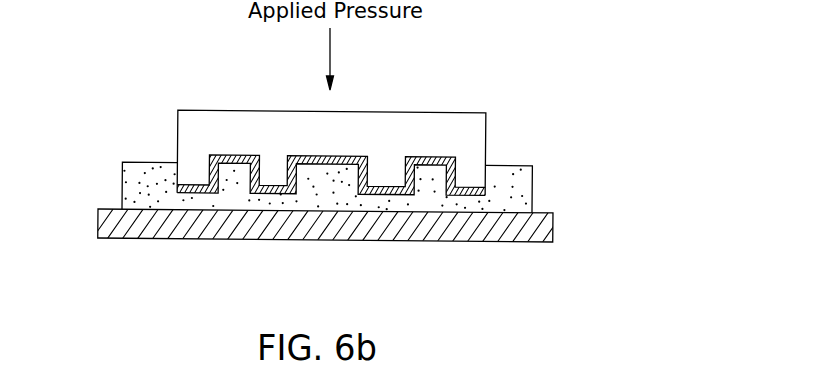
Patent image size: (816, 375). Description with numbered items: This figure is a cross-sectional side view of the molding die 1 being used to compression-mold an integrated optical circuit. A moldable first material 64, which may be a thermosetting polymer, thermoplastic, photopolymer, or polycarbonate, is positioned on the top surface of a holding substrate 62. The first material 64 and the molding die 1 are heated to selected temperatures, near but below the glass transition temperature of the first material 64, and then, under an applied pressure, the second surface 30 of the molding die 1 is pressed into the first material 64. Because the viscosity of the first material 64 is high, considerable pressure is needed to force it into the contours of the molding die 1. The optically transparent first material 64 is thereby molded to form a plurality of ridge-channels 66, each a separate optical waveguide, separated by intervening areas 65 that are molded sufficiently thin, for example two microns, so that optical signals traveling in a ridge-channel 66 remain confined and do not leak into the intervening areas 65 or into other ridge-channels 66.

The molding die 1 is at (190, 127).
The second surface 30 is at (395, 192).
The holding substrate 62 is at (130, 226).
The first material 64 is at (135, 183).
The intervening areas 65 is at (196, 197).
The ridge-channel 66 is at (233, 178).